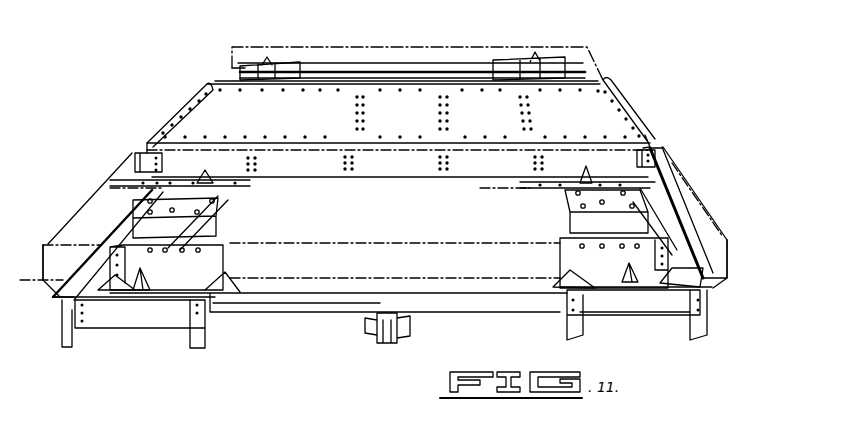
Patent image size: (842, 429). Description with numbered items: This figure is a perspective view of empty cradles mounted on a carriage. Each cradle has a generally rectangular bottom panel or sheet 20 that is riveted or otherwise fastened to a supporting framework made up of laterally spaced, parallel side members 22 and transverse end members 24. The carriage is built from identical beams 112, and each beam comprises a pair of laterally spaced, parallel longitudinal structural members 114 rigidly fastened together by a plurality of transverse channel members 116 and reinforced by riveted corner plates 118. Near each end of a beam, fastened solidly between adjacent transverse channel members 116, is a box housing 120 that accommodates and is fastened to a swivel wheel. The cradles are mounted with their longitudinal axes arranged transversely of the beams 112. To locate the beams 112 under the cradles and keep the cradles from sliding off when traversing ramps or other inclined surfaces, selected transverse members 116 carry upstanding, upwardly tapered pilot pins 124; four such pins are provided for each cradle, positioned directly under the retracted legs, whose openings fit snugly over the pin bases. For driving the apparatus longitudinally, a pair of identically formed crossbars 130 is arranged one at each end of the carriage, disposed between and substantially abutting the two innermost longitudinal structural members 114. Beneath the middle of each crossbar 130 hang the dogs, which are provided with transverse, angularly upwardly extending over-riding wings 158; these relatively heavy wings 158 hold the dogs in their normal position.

The bottom panel 20 is at (486, 121).
The side members 22 is at (392, 178).
The end members 24 is at (641, 118).
The beams 112 is at (110, 226).
The longitudinal structural members 114 is at (530, 199).
The transverse channel member 116 is at (136, 318).
The corner plates 118 is at (145, 183).
The box housing 120 is at (238, 74).
The pilot pins 124 is at (160, 263).
The crossbars 130 is at (372, 70).
The over-riding wings 158 is at (402, 343).